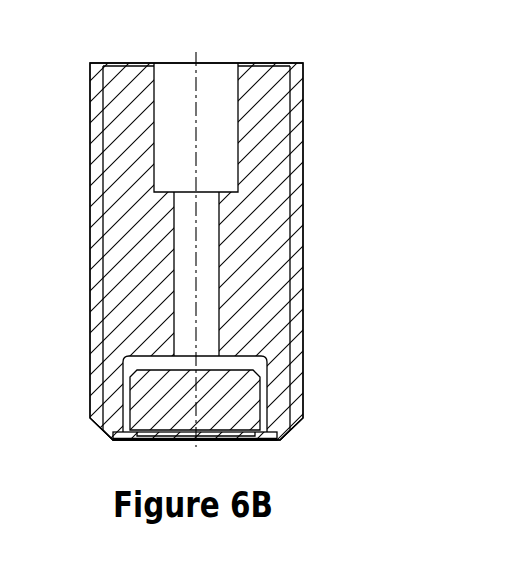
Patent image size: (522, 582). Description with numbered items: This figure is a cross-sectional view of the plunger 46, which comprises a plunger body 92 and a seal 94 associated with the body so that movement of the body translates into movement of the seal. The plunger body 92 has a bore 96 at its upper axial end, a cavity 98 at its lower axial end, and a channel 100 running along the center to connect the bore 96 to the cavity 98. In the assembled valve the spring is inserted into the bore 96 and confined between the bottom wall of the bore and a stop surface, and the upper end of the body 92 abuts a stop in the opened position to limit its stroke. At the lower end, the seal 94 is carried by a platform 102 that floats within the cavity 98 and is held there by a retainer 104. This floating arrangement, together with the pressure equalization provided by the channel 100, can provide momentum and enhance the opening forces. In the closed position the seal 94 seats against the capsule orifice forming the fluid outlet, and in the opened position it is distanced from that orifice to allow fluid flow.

The plunger 46 is at (318, 305).
The plunger body 92 is at (290, 125).
The seal 94 is at (237, 441).
The bore 96 is at (220, 124).
The cavity 98 is at (240, 361).
The channel 100 is at (202, 250).
The platform 102 is at (165, 393).
The retainer 104 is at (131, 439).